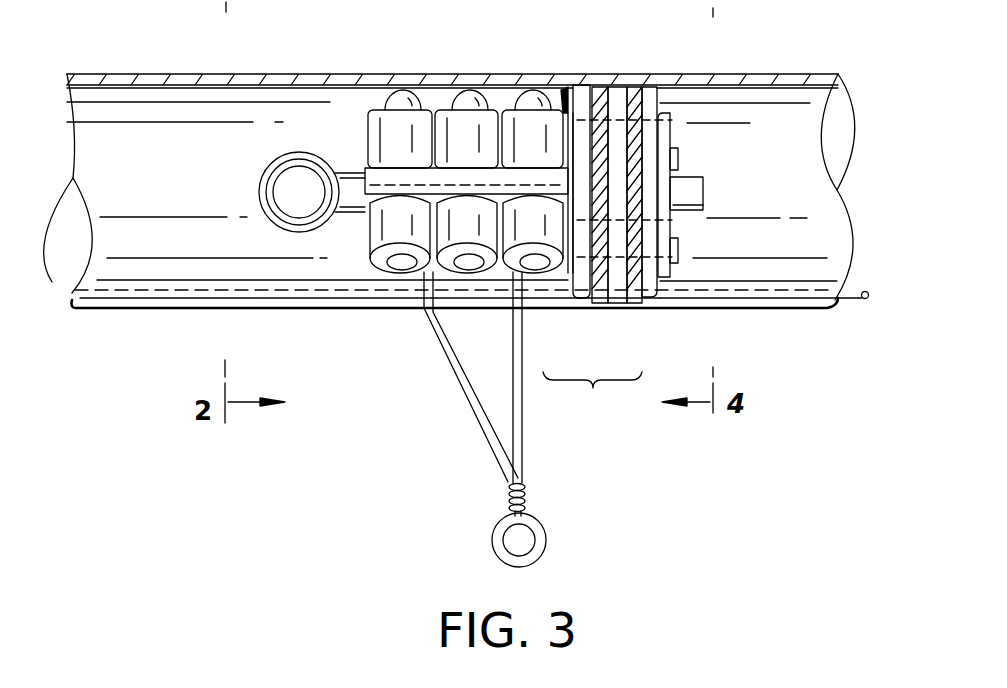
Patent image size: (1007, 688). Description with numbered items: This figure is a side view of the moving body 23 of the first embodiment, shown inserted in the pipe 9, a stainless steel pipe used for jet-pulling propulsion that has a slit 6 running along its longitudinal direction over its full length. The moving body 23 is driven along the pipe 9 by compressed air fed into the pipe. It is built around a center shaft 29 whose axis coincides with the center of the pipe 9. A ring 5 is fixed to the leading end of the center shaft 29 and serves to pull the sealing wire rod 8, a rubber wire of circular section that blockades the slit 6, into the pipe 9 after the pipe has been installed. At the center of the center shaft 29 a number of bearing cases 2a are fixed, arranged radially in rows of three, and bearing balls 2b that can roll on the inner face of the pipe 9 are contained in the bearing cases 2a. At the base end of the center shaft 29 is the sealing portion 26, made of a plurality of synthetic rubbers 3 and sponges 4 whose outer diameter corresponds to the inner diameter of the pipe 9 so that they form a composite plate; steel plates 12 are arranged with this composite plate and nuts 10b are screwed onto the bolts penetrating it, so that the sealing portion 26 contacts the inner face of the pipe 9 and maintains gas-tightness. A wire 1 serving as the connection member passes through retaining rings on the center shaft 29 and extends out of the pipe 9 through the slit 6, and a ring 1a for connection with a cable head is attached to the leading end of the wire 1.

The wire 1 is at (465, 383).
The ring 1a is at (545, 530).
The bearing cases 2a is at (490, 112).
The bearing balls 2b is at (410, 90).
The synthetic rubbers 3 is at (622, 303).
The sponges 4 is at (601, 305).
The ring 5 is at (295, 150).
The slit 6 is at (127, 310).
The sealing wire rod 8 is at (850, 307).
The pipe 9 is at (52, 282).
The nuts 10b is at (680, 160).
The steel plates 12 is at (655, 87).
The moving body 23 is at (557, 93).
The sealing portion 26 is at (592, 400).
The center shaft 29 is at (690, 210).